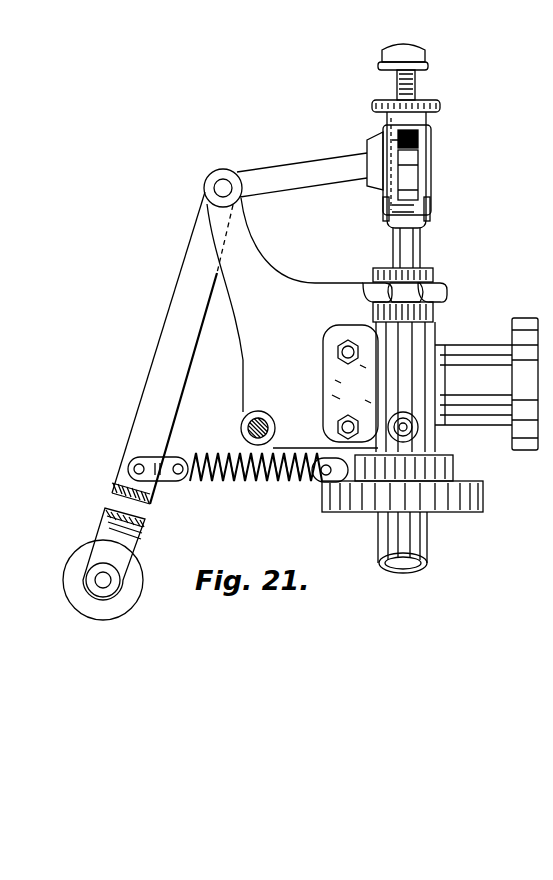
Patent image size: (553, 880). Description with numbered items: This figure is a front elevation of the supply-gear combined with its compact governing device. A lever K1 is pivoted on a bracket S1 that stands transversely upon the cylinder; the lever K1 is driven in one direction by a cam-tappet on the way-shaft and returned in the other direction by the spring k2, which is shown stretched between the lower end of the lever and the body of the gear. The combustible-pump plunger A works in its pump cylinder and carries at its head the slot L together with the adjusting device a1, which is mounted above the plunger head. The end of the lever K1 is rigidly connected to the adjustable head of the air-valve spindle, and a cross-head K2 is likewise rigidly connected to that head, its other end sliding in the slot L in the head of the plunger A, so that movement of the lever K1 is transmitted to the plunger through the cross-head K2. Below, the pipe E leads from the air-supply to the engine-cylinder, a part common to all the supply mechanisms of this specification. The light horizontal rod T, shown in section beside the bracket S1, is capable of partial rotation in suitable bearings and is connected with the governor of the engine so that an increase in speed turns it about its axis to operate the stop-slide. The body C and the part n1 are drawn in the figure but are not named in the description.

The adjusting device a1 is at (413, 86).
The cross-head K2 is at (410, 160).
The slot L is at (404, 188).
The combustible-pump plunger A is at (417, 252).
The cylinder body C is at (430, 390).
The bearing boss n1 is at (448, 440).
The pipe E is at (424, 537).
The lever K1 is at (223, 376).
The bracket S1 is at (292, 323).
The light horizontal rod T is at (250, 430).
The spring k2 is at (269, 483).